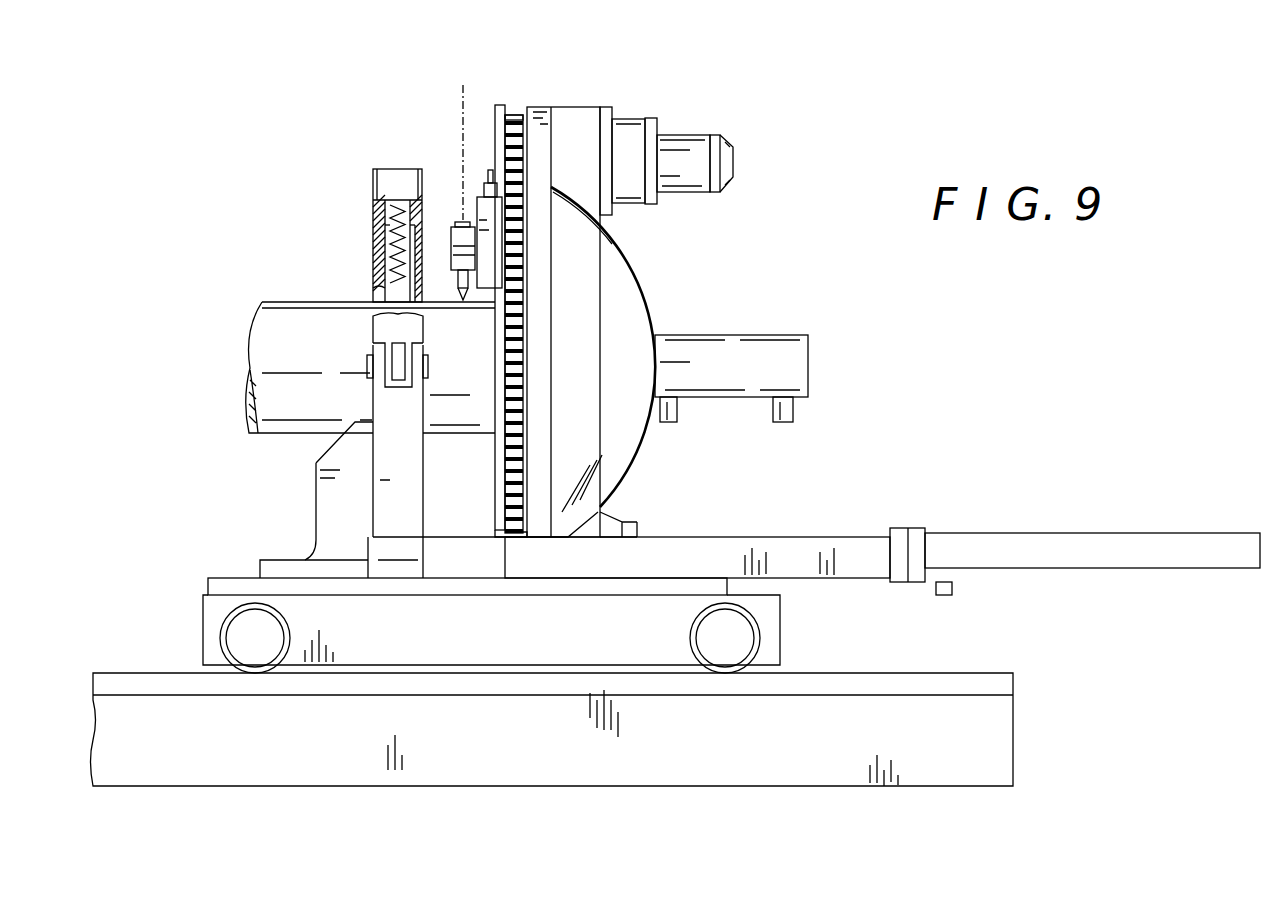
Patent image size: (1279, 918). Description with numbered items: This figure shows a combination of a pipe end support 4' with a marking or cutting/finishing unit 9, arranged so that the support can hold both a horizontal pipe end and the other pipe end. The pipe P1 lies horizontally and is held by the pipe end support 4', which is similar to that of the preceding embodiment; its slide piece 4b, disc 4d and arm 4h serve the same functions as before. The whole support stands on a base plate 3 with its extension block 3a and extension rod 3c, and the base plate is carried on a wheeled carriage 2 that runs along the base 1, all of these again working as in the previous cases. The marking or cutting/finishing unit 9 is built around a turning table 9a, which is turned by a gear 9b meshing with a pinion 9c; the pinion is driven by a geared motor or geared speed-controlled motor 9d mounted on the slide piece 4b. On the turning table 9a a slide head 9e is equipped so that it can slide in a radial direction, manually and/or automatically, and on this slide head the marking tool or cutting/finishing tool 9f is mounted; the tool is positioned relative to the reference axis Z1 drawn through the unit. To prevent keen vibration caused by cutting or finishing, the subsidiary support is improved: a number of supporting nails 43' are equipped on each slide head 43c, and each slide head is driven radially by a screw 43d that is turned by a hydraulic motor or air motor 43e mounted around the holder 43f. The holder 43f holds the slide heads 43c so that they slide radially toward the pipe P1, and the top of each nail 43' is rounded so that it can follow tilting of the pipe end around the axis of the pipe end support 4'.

The base 1 is at (998, 746).
The carriage 2 is at (765, 636).
The base plate 3 is at (688, 578).
The extension block 3a is at (818, 550).
The extension rod 3c is at (1010, 536).
The pipe end support 4' is at (672, 286).
The slide piece 4b is at (577, 117).
The disc 4d is at (630, 308).
The arm 4h is at (782, 343).
The marking or cutting/finishing unit 9 is at (498, 104).
The turning table 9a is at (500, 492).
The gear 9b is at (508, 458).
The pinion 9c is at (512, 116).
The geared motor 9d is at (687, 147).
The slide head 9e is at (483, 212).
The marking tool or cutting/finishing tool 9f is at (457, 222).
The axis line Z1 is at (466, 95).
The supporting nail 43' is at (356, 208).
The slide head 43c is at (373, 230).
The screw 43d is at (386, 212).
The hydraulic motor or air motor 43e is at (387, 177).
The holder 43f is at (370, 274).
The pipe P1 is at (296, 314).